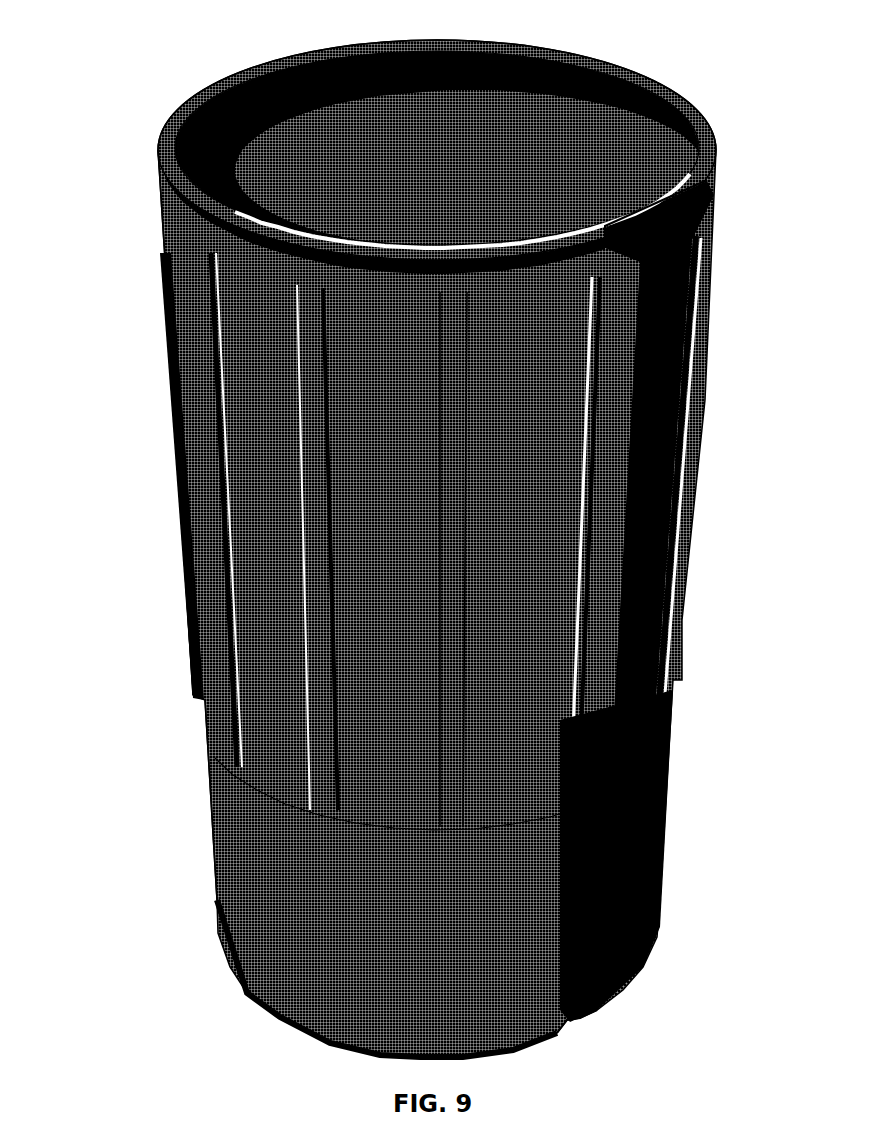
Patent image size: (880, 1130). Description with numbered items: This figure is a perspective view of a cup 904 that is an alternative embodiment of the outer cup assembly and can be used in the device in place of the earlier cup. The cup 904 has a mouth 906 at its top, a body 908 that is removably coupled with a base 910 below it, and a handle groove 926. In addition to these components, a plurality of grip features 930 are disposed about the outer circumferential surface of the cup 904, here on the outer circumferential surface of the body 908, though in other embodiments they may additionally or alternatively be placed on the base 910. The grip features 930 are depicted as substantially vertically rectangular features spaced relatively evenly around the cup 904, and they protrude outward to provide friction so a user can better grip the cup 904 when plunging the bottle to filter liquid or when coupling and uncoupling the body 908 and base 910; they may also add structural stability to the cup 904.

The cup 904 is at (123, 54).
The mouth 906 is at (300, 85).
The body 908 is at (180, 195).
The base 910 is at (217, 860).
The handle groove 926 is at (567, 1018).
The grip features 930 is at (172, 320).